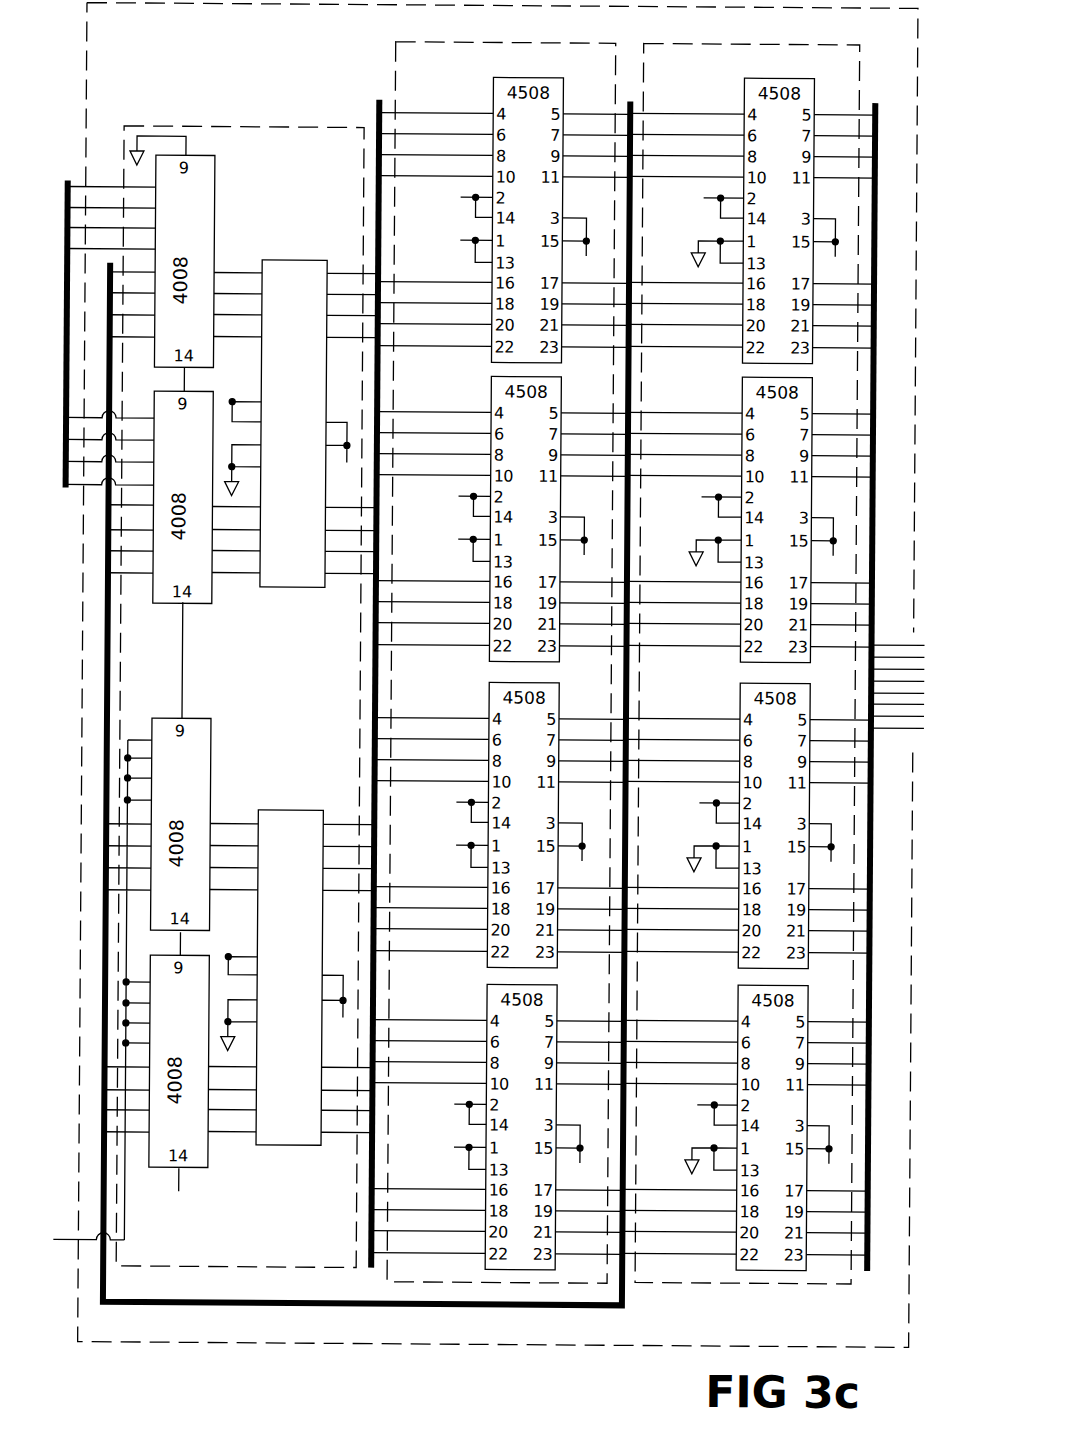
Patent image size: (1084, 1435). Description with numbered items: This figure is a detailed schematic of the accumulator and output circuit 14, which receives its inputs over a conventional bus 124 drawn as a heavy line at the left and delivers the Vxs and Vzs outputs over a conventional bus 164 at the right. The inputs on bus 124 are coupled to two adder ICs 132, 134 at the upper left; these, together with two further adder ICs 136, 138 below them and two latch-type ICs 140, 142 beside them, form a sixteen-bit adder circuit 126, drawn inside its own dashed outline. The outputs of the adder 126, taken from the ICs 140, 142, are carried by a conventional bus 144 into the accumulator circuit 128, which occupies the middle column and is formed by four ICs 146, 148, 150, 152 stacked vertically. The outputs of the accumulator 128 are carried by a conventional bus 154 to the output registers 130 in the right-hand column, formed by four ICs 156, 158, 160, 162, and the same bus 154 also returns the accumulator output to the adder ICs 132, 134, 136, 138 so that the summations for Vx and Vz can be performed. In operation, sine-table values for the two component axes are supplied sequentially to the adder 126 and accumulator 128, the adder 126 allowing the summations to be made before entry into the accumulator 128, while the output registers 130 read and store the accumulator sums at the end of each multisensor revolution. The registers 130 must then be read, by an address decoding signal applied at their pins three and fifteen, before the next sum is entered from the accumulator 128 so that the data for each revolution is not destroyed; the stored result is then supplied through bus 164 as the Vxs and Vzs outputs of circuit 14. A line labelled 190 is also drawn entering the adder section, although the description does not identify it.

The accumulator and output circuit 14 is at (918, 122).
The bus 124 is at (67, 490).
The 16-bit adder circuit 126 is at (282, 1265).
The accumulator circuit 128 is at (556, 50).
The output registers 130 is at (800, 47).
The 4008 IC 132 is at (216, 157).
The 4008 IC 134 is at (216, 601).
The 4008 IC 136 is at (216, 735).
The 4008 IC 138 is at (216, 1167).
The 4508 IC 140 is at (291, 258).
The 4508 IC 142 is at (299, 808).
The bus 144 is at (377, 672).
The 4508 IC 146 is at (493, 87).
The 4508 IC 148 is at (493, 386).
The 4508 IC 150 is at (493, 695).
The 4508 IC 152 is at (493, 997).
The bus 154 is at (222, 1304).
The 4508 IC 156 is at (744, 85).
The 4508 IC 158 is at (744, 386).
The 4508 IC 160 is at (744, 692).
The 4508 IC 162 is at (744, 995).
The bus 164 is at (878, 895).
The carry input line 190 is at (65, 1239).